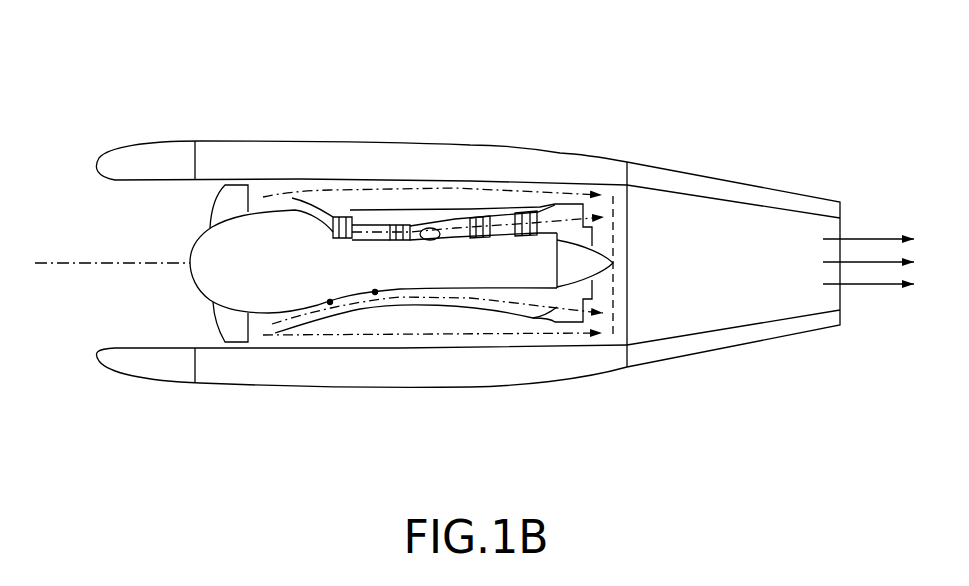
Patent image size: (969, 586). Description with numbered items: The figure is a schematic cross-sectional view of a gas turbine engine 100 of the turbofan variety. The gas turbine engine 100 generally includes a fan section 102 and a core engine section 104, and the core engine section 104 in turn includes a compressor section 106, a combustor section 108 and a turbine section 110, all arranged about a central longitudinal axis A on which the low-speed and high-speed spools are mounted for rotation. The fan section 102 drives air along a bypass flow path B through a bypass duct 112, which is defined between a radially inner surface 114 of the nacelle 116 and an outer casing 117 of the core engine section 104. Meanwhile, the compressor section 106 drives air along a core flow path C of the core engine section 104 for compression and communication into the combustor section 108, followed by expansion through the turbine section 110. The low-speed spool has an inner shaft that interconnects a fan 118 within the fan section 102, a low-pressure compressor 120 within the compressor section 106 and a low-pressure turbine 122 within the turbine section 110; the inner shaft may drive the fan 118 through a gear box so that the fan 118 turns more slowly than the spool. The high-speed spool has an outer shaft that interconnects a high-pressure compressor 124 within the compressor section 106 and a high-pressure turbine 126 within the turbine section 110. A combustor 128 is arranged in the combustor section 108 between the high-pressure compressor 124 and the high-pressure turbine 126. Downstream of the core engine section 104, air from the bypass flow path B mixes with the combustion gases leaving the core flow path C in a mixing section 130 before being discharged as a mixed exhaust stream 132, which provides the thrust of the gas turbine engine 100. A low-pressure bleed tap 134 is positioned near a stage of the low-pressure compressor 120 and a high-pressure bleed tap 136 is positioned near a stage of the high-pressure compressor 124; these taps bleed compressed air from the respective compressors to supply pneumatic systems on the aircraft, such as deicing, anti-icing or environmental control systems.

The gas turbine engine 100 is at (116, 96).
The fan section 102 is at (202, 208).
The core engine section 104 is at (328, 245).
The compressor section 106 is at (355, 216).
The combustor section 108 is at (440, 219).
The turbine section 110 is at (495, 206).
The bypass duct 112 is at (353, 343).
The radially inner surface 114 is at (405, 351).
The nacelle 116 is at (209, 372).
The outer casing 117 is at (450, 320).
The fan 118 is at (222, 340).
The low-pressure compressor 120 is at (340, 216).
The low-pressure turbine 122 is at (528, 205).
The high-pressure compressor 124 is at (398, 219).
The high-pressure turbine 126 is at (481, 205).
The combustor 128 is at (425, 221).
The mixing section 130 is at (613, 217).
The mixed exhaust stream 132 is at (884, 237).
The low-pressure bleed tap 134 is at (330, 302).
The high-pressure bleed tap 136 is at (375, 292).
The central longitudinal axis A is at (112, 267).
The bypass flow path B is at (303, 338).
The core flow path C is at (557, 306).